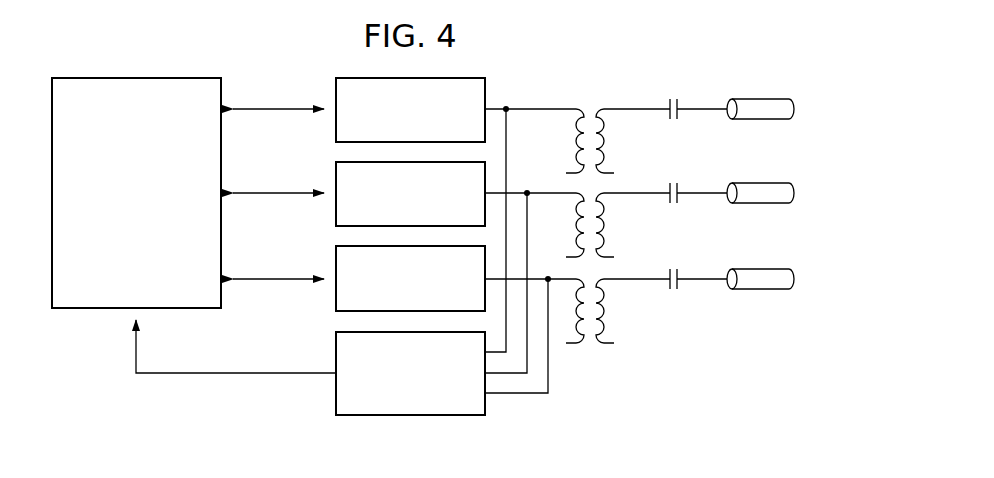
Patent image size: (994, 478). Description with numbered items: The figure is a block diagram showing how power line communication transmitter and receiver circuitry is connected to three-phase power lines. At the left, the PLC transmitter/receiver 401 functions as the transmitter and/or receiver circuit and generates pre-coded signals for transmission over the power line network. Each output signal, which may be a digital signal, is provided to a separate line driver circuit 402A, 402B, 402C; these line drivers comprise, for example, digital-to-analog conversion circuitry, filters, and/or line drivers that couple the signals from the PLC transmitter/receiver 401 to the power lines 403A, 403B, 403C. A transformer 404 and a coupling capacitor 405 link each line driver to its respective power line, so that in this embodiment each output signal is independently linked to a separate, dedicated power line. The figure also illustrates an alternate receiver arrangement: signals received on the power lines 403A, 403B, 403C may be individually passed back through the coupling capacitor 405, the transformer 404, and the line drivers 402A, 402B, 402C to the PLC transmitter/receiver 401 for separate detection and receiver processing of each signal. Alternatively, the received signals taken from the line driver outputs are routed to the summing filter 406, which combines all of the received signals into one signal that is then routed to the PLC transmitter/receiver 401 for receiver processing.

The PLC transmitter/receiver 401 is at (114, 253).
The line driver circuit 402A is at (336, 93).
The line driver circuit 402B is at (336, 177).
The line driver circuit 402C is at (336, 295).
The power line 403A is at (762, 98).
The power line 403B is at (762, 182).
The power line 403C is at (760, 290).
The transformer 404 is at (592, 104).
The coupling capacitor 405 is at (675, 97).
The summing filter 406 is at (336, 383).